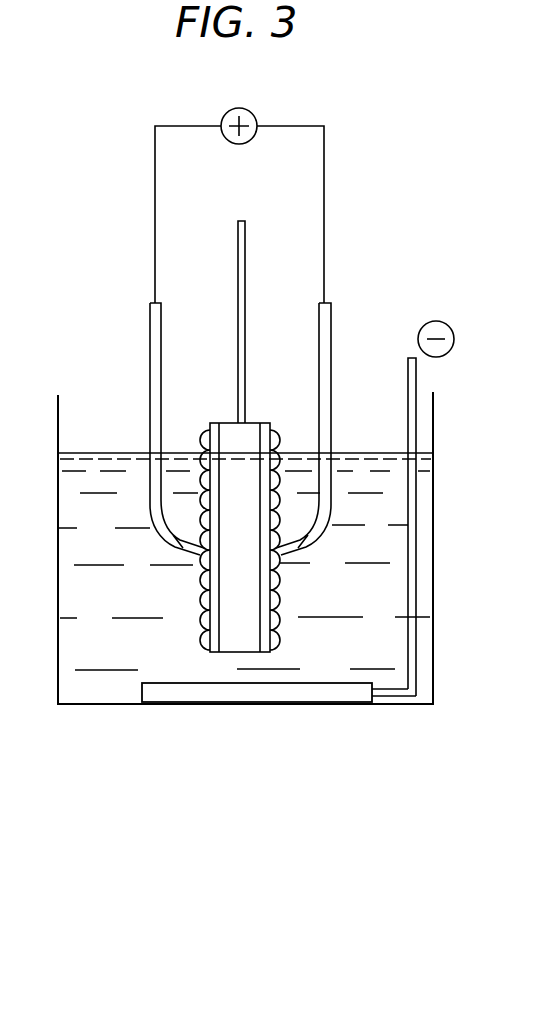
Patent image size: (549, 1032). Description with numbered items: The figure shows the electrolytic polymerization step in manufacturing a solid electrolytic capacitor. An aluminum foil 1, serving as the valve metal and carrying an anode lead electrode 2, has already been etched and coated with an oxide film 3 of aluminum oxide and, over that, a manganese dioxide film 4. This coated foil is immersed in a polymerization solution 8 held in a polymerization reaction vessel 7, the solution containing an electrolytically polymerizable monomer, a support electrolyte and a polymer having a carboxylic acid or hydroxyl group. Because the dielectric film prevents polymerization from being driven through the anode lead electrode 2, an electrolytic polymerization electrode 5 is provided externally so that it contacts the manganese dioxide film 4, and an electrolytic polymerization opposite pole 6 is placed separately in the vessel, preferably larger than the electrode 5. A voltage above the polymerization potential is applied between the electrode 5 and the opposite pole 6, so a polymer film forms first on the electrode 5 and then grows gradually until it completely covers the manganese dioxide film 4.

The aluminum foil 1 is at (252, 430).
The anode lead electrode 2 is at (246, 243).
The oxide film 3 is at (215, 647).
The manganese dioxide film 4 is at (203, 612).
The electrolytic polymerization electrode 5 is at (150, 332).
The electrolytic polymerization opposite pole 6 is at (314, 694).
The polymerization reaction vessel 7 is at (433, 555).
The polymerization solution 8 is at (70, 550).